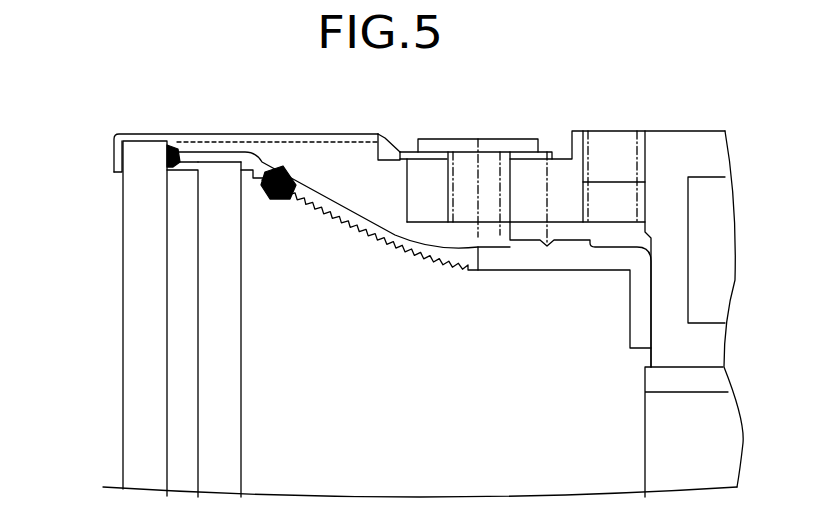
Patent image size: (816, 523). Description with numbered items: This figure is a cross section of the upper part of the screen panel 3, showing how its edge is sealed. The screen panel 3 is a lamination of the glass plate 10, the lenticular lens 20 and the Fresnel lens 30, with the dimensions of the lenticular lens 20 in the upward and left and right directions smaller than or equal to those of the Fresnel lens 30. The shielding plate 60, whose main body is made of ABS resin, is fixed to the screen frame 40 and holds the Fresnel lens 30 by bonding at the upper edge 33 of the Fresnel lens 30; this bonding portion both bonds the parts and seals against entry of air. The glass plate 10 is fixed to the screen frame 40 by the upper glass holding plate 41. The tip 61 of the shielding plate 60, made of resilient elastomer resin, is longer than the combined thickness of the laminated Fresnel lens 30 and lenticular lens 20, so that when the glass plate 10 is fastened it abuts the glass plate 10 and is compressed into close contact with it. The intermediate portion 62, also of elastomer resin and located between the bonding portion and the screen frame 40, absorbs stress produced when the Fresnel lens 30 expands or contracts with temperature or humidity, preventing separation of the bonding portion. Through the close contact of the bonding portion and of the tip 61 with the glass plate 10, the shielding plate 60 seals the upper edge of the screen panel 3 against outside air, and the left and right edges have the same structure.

The screen panel 3 is at (62, 353).
The glass plate 10 is at (145, 373).
The lenticular lens 20 is at (180, 420).
The Fresnel lens 30 is at (223, 474).
The upper edge of the Fresnel lens 33 is at (223, 165).
The screen frame 40 is at (612, 131).
The upper glass holding plate 41 is at (113, 160).
The shielding plate 60 is at (375, 224).
The tip 61 is at (173, 150).
The intermediate portion 62 is at (306, 187).